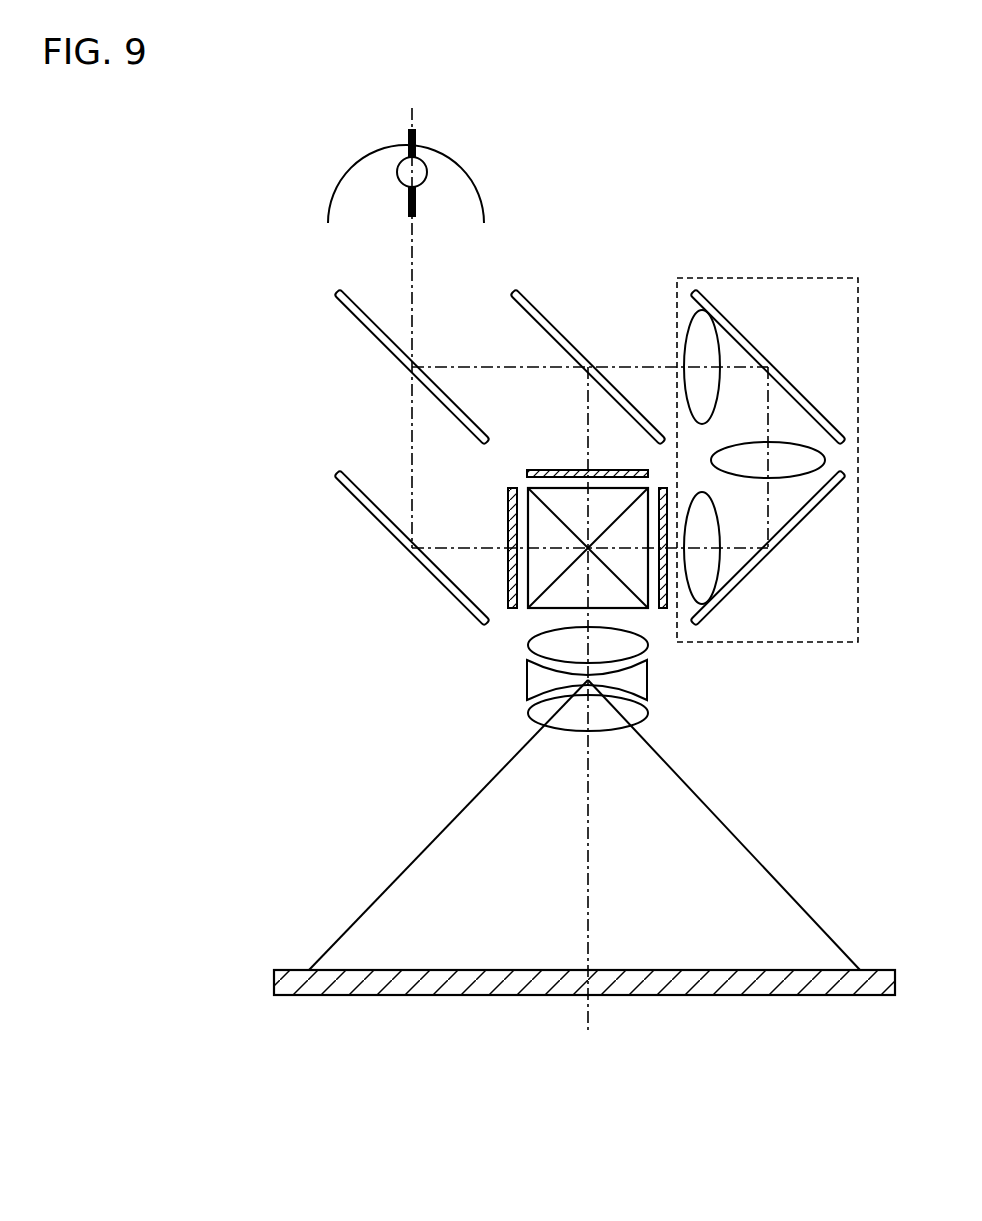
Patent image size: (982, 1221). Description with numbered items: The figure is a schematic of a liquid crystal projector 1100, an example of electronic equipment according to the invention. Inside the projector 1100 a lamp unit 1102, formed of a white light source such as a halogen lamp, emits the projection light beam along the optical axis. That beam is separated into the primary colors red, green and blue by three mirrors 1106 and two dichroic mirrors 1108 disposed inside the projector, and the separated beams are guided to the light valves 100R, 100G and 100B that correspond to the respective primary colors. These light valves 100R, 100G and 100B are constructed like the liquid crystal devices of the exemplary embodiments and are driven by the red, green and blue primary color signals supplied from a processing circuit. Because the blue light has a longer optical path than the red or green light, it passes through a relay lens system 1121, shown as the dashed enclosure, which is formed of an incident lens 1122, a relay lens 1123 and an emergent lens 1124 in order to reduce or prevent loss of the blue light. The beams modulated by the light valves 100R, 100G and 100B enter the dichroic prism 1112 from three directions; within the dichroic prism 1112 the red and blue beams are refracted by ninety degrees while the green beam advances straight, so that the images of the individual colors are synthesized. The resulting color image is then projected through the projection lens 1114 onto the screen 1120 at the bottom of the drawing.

The projector 1100 is at (268, 258).
The lamp unit 1102 is at (427, 171).
The dichroic mirrors 1108 is at (362, 322).
The mirrors 1106 is at (368, 518).
The relay lens system 1121 is at (773, 278).
The incident lens 1122 is at (688, 318).
The relay lens 1123 is at (792, 446).
The emergent lens 1124 is at (707, 572).
The light valve 100R is at (508, 508).
The light valve 100G is at (544, 470).
The light valve 100B is at (664, 612).
The dichroic prism 1112 is at (641, 605).
The projection lens 1114 is at (513, 632).
The screen 1120 is at (884, 970).